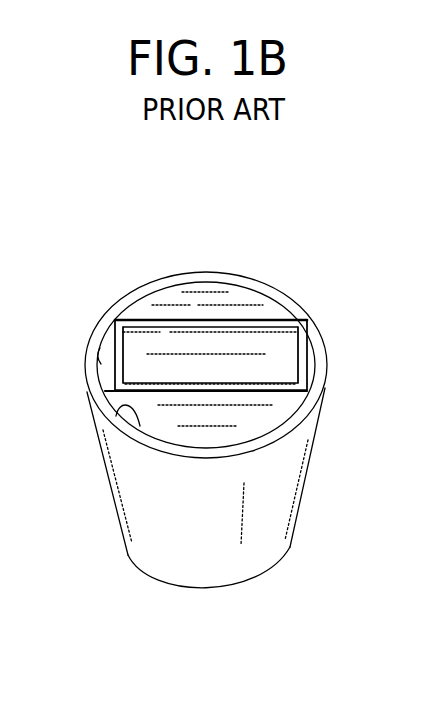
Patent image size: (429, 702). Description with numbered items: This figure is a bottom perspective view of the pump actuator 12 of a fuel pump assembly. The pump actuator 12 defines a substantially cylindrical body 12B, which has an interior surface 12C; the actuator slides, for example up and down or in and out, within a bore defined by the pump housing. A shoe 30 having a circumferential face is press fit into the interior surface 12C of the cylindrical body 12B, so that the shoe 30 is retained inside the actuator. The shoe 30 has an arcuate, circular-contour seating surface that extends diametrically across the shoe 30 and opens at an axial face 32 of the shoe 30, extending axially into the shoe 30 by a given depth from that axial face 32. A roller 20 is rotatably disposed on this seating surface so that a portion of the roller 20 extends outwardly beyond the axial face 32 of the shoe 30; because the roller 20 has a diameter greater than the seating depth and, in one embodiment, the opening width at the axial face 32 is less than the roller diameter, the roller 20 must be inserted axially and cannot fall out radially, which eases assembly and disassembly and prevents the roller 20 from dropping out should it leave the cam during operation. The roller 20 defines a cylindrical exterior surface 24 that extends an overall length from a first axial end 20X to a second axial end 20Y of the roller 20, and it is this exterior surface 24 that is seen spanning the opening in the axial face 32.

The pump actuator 12 is at (78, 468).
The cylindrical body 12B is at (233, 557).
The interior surface 12C is at (138, 428).
The roller 20 is at (286, 336).
The first axial end 20X is at (97, 348).
The second axial end 20Y is at (310, 356).
The cylindrical exterior surface 24 is at (233, 343).
The shoe 30 is at (288, 300).
The axial face 32 is at (257, 421).